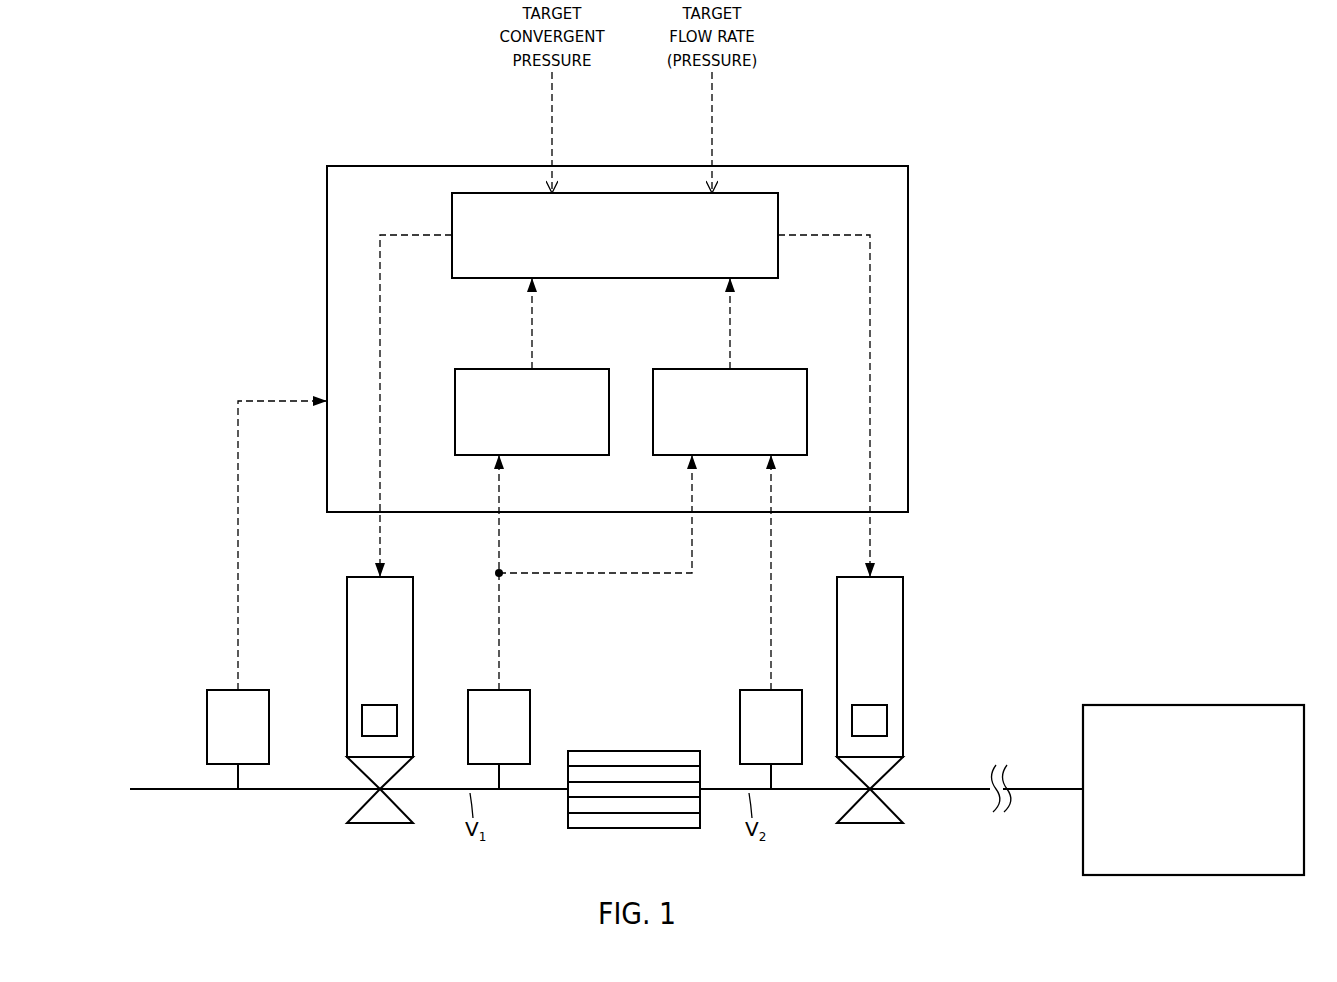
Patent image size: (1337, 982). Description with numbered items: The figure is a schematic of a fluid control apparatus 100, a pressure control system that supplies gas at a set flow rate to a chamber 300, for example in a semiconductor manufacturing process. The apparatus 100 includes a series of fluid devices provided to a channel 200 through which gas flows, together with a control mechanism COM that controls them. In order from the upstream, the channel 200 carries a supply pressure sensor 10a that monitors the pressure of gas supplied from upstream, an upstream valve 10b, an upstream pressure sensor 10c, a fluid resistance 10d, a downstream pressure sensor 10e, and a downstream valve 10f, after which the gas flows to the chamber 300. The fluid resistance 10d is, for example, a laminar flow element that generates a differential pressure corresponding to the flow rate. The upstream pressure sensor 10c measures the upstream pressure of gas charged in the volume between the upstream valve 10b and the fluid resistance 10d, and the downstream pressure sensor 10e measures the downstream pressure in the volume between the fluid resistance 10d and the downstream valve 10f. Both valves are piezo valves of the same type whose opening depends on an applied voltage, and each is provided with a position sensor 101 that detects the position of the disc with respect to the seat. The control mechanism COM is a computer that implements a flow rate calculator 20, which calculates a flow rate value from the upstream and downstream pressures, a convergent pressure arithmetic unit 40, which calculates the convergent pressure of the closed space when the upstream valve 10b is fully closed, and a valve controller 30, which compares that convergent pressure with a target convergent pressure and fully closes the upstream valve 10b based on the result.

The fluid control apparatus 100 is at (273, 195).
The control mechanism COM is at (375, 166).
The valve controller 30 is at (515, 193).
The convergent pressure arithmetic unit 40 is at (474, 369).
The flow rate calculator 20 is at (782, 369).
The supply pressure sensor 10a is at (207, 727).
The upstream valve 10b is at (347, 622).
The upstream pressure sensor 10c is at (476, 690).
The fluid resistance 10d is at (636, 751).
The downstream pressure sensor 10e is at (748, 690).
The downstream valve 10f is at (903, 622).
The position sensor 101 is at (362, 720).
The channel 200 is at (184, 793).
The chamber 300 is at (1193, 705).